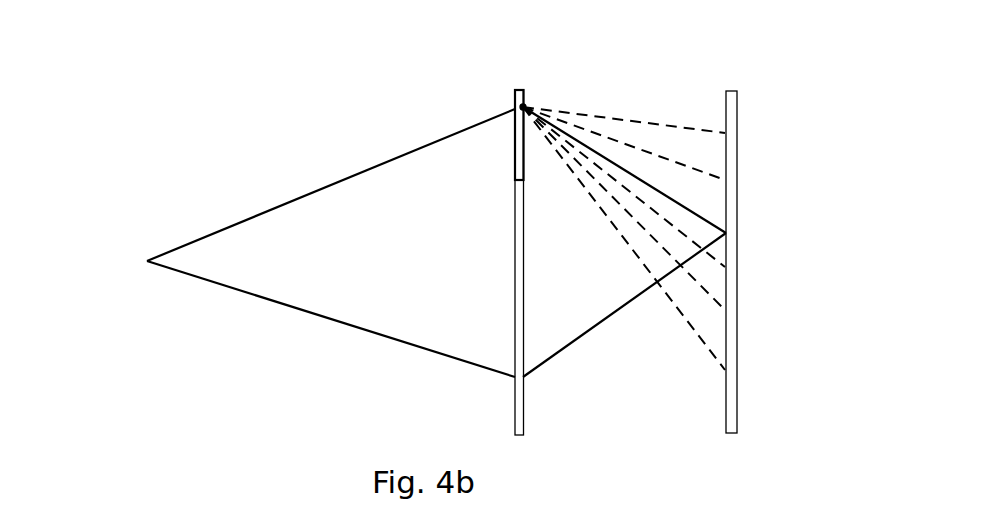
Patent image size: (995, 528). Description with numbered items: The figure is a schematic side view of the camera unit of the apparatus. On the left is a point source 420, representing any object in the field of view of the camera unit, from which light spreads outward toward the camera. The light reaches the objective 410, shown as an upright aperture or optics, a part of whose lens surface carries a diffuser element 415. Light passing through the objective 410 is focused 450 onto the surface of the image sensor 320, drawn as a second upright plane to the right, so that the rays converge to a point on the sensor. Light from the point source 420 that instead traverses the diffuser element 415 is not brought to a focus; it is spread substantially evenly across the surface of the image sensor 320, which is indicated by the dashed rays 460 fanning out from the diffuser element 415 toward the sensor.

The point source 420 is at (146, 262).
The camera objective 410 is at (525, 424).
The diffuser element 415 is at (527, 93).
The diverging light rays (dashed) 460 is at (612, 118).
The focused light 450 is at (612, 315).
The image sensor 320 is at (738, 430).